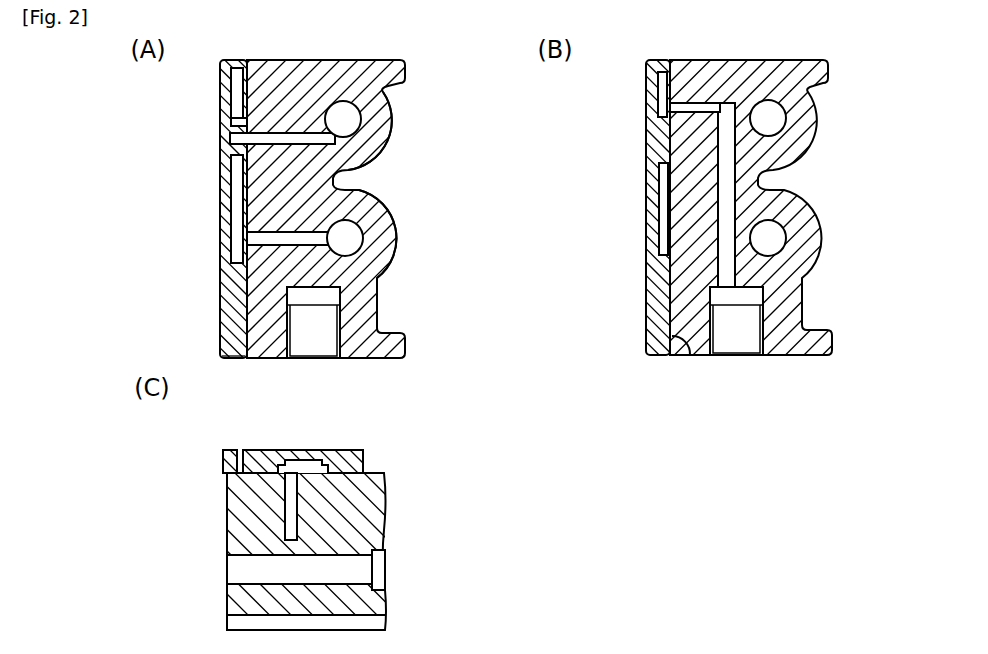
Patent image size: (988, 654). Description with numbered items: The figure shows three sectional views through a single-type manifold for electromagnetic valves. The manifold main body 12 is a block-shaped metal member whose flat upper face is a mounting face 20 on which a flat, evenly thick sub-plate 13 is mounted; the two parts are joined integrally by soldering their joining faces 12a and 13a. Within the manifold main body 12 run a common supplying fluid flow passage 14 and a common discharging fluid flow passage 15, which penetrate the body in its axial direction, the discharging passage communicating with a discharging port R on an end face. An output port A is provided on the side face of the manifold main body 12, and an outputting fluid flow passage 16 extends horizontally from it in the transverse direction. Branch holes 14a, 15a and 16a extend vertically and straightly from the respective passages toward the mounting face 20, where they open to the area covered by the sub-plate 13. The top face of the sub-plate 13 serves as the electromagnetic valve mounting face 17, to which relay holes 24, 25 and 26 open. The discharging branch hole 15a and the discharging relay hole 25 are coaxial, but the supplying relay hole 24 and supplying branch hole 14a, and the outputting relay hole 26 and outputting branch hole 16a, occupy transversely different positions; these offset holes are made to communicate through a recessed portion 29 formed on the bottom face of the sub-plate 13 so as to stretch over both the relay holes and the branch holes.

The manifold main body 12 is at (378, 75).
The joining face of the manifold main body 12a is at (672, 290).
The sub-plate 13 is at (250, 301).
The joining face of the sub-plate 13a is at (690, 352).
The common supplying fluid flow passage 14 is at (350, 238).
The branch hole for supplying 14a is at (375, 280).
The common discharging fluid flow passage 15 is at (350, 120).
The branch hole for discharging 15a is at (365, 167).
The outputting fluid flow passage 16 is at (728, 178).
The branch hole for outputting 16a is at (702, 102).
The electromagnetic valve mounting face 17 is at (222, 256).
The mounting face 20 is at (222, 334).
The relay hole for supplying 24 is at (238, 173).
The relay hole for discharging 25 is at (232, 141).
The relay hole for outputting 26 is at (232, 112).
The recessed portion 29 is at (238, 89).
The output port A is at (328, 318).
The discharging port R is at (380, 558).